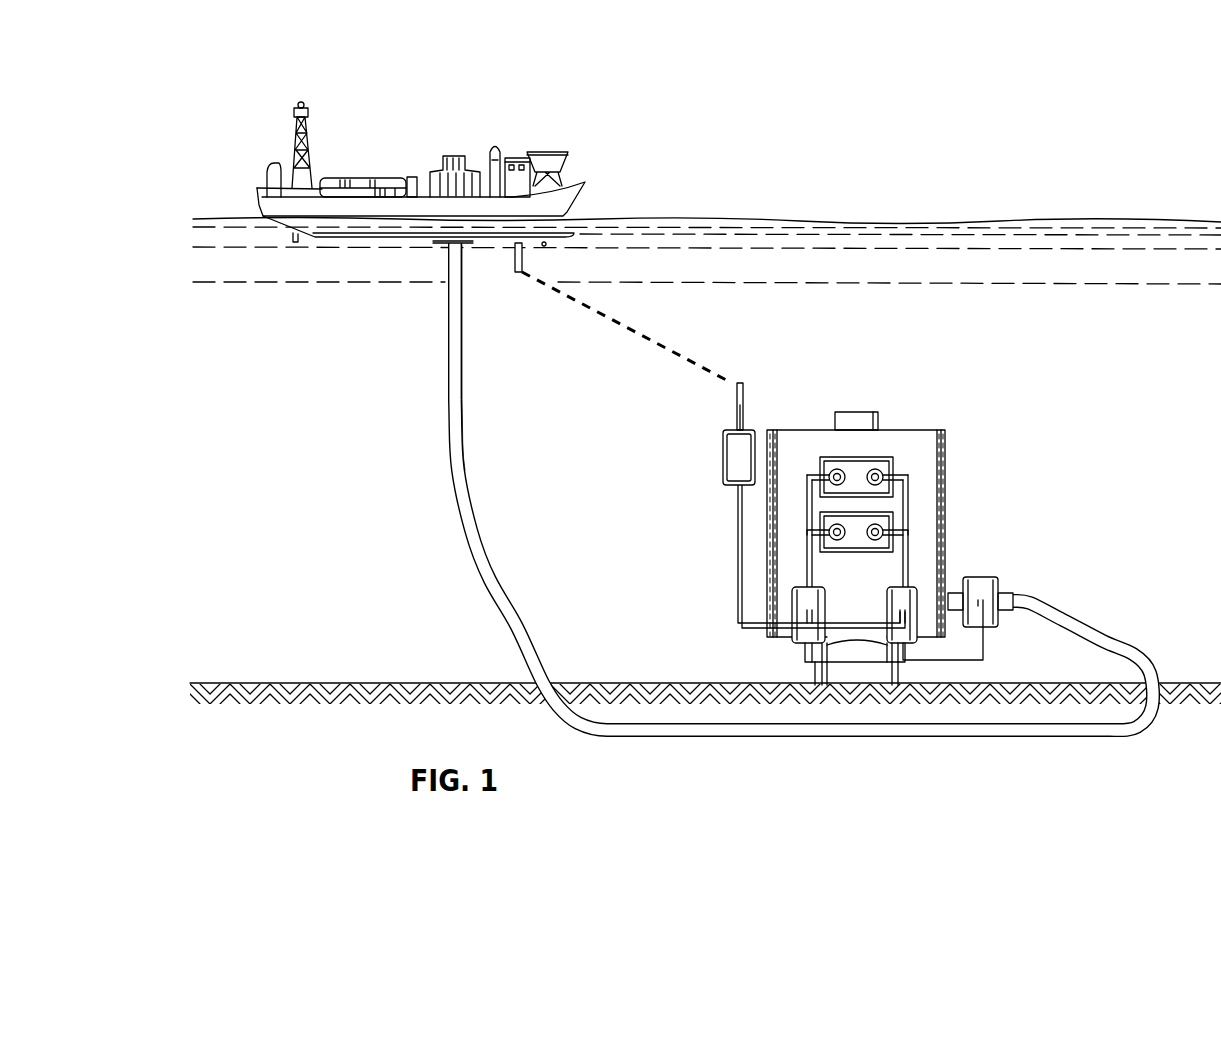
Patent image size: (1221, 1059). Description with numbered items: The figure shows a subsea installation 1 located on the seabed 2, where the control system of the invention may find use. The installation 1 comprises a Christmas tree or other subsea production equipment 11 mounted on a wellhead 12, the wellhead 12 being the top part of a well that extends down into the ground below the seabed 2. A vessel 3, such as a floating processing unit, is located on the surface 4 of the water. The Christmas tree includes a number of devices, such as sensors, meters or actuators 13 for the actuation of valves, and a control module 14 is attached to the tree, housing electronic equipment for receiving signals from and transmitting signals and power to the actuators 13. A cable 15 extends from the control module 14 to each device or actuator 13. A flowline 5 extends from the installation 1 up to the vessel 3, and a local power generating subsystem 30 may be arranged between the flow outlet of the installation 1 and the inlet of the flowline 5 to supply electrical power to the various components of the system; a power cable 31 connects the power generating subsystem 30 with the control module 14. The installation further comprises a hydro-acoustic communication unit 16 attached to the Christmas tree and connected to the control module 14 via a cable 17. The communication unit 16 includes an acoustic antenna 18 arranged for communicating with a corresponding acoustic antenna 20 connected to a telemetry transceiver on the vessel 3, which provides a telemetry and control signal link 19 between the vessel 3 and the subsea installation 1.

The installation 1 is at (905, 410).
The seabed 2 is at (377, 680).
The vessel 3 is at (582, 156).
The surface 4 is at (843, 218).
The flowline 5 is at (460, 505).
The subsea production equipment 11 is at (935, 470).
The wellhead 12 is at (805, 677).
The actuators 13 is at (834, 469).
The control module 14 is at (800, 600).
The cable 15 is at (807, 563).
The hydro-acoustic communication unit 16 is at (723, 458).
The cable 17 is at (737, 512).
The acoustic antenna 18 is at (743, 400).
The telemetry and control signal link 19 is at (628, 328).
The acoustic antenna 20 is at (515, 262).
The local power generating subsystem 30 is at (978, 578).
The power cable 31 is at (986, 657).